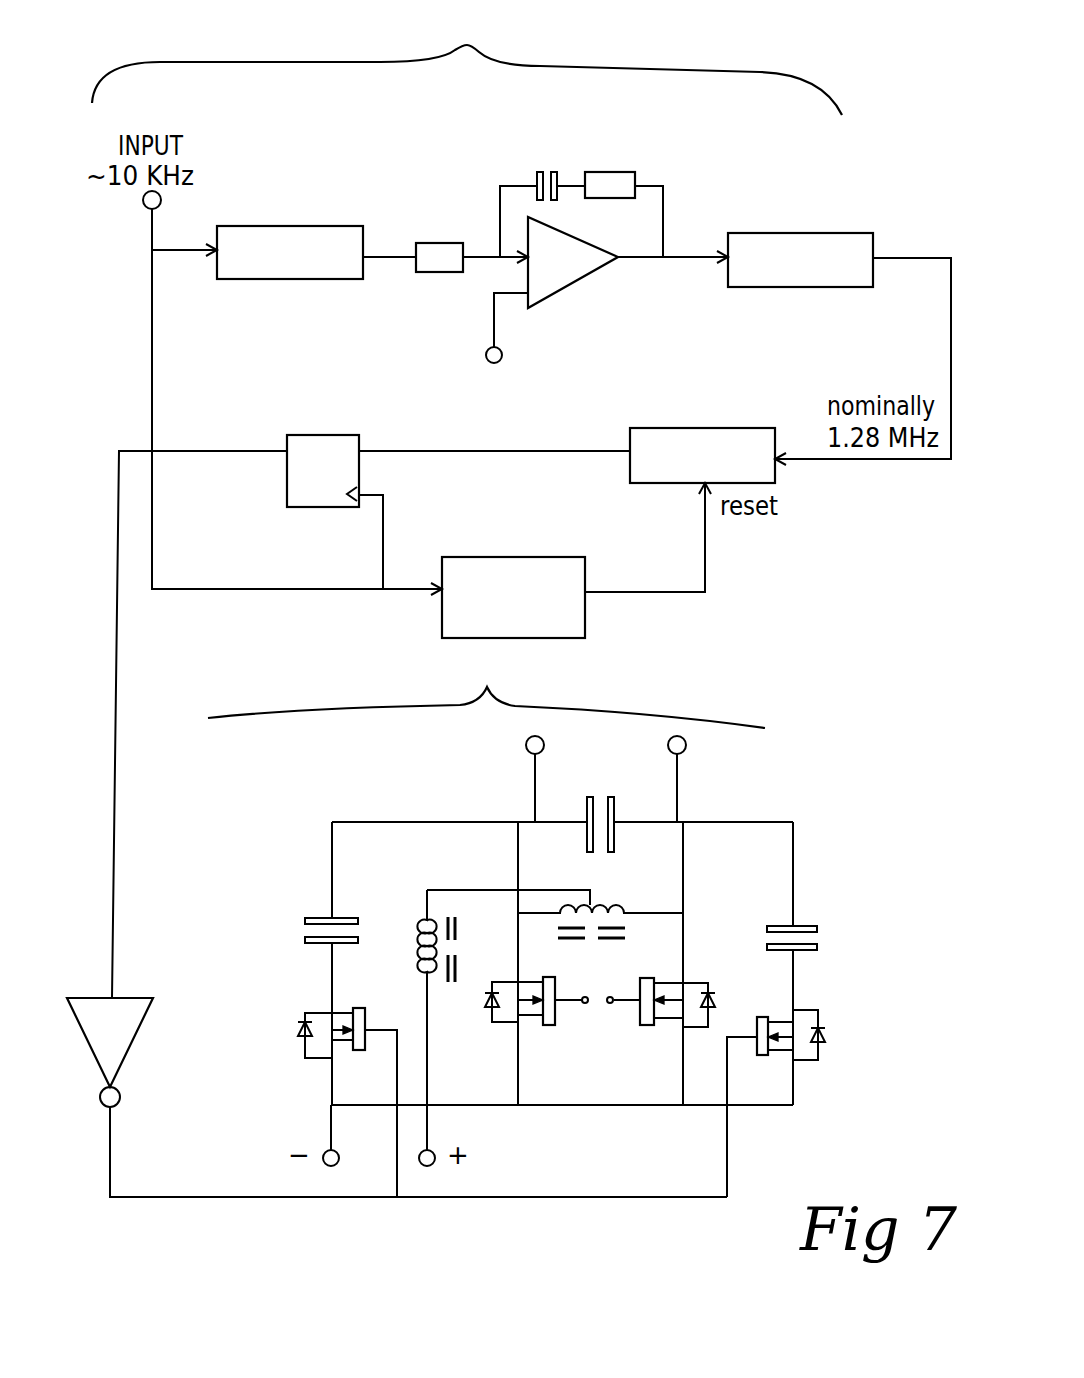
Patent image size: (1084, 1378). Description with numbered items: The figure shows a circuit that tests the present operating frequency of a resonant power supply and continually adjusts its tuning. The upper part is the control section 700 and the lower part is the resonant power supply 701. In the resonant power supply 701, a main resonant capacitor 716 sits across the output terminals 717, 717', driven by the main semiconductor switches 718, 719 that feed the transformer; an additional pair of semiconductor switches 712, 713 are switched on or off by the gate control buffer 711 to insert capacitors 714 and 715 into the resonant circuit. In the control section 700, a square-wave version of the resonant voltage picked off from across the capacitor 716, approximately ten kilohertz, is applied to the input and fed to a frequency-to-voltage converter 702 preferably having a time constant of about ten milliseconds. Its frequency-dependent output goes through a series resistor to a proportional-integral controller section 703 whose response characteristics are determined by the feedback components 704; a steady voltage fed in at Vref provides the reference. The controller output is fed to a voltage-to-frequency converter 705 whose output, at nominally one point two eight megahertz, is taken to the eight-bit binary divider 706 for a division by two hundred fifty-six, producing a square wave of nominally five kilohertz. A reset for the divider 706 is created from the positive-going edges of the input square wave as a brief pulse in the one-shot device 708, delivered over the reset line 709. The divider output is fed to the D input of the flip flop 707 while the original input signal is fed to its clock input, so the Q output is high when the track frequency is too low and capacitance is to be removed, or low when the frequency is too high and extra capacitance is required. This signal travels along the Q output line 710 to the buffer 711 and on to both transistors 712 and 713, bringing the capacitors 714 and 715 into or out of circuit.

The control section 700 is at (467, 61).
The resonant power supply 701 is at (486, 689).
The frequency-to-voltage converter 702 is at (340, 226).
The proportional-integral controller section 703 is at (518, 223).
The feedback components 704 is at (612, 172).
The voltage-to-frequency converter 705 is at (862, 181).
The 8-bit binary divider 706 is at (757, 402).
The flip flop 707 is at (344, 411).
The one-shot device 708 is at (552, 533).
The reset line 709 is at (697, 597).
The Q output line 710 is at (122, 657).
The gate control buffer 711 is at (190, 975).
The semiconductor switch 712 is at (350, 1050).
The semiconductor switch 713 is at (762, 1055).
The capacitor 714 is at (880, 907).
The capacitor 715 is at (338, 918).
The resonant capacitor 716 is at (615, 802).
The output terminal 717 is at (751, 758).
The output terminal 717' is at (491, 779).
The semiconductor switch 718 is at (552, 1027).
The semiconductor switch 719 is at (630, 1018).